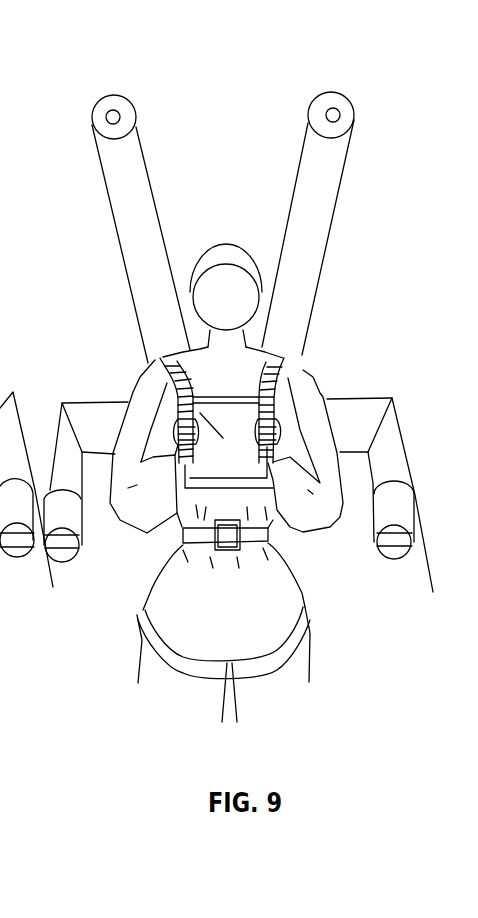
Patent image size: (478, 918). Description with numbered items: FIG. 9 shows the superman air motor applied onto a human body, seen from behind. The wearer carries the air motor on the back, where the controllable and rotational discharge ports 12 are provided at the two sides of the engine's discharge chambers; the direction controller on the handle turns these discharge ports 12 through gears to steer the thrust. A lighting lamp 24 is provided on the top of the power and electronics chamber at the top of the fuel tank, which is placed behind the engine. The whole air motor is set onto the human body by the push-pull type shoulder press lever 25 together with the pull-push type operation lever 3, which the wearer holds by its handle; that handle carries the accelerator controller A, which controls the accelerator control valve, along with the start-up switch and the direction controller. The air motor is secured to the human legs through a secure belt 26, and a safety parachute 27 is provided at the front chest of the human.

The lighting lamp 24 is at (322, 111).
The safety parachute 27 is at (150, 363).
The shoulder press lever 25 is at (278, 360).
The operation lever 3 is at (277, 393).
The accelerator controller A is at (183, 462).
The controllable and rotational discharge ports 12 is at (226, 504).
The secure belt 26 is at (268, 535).